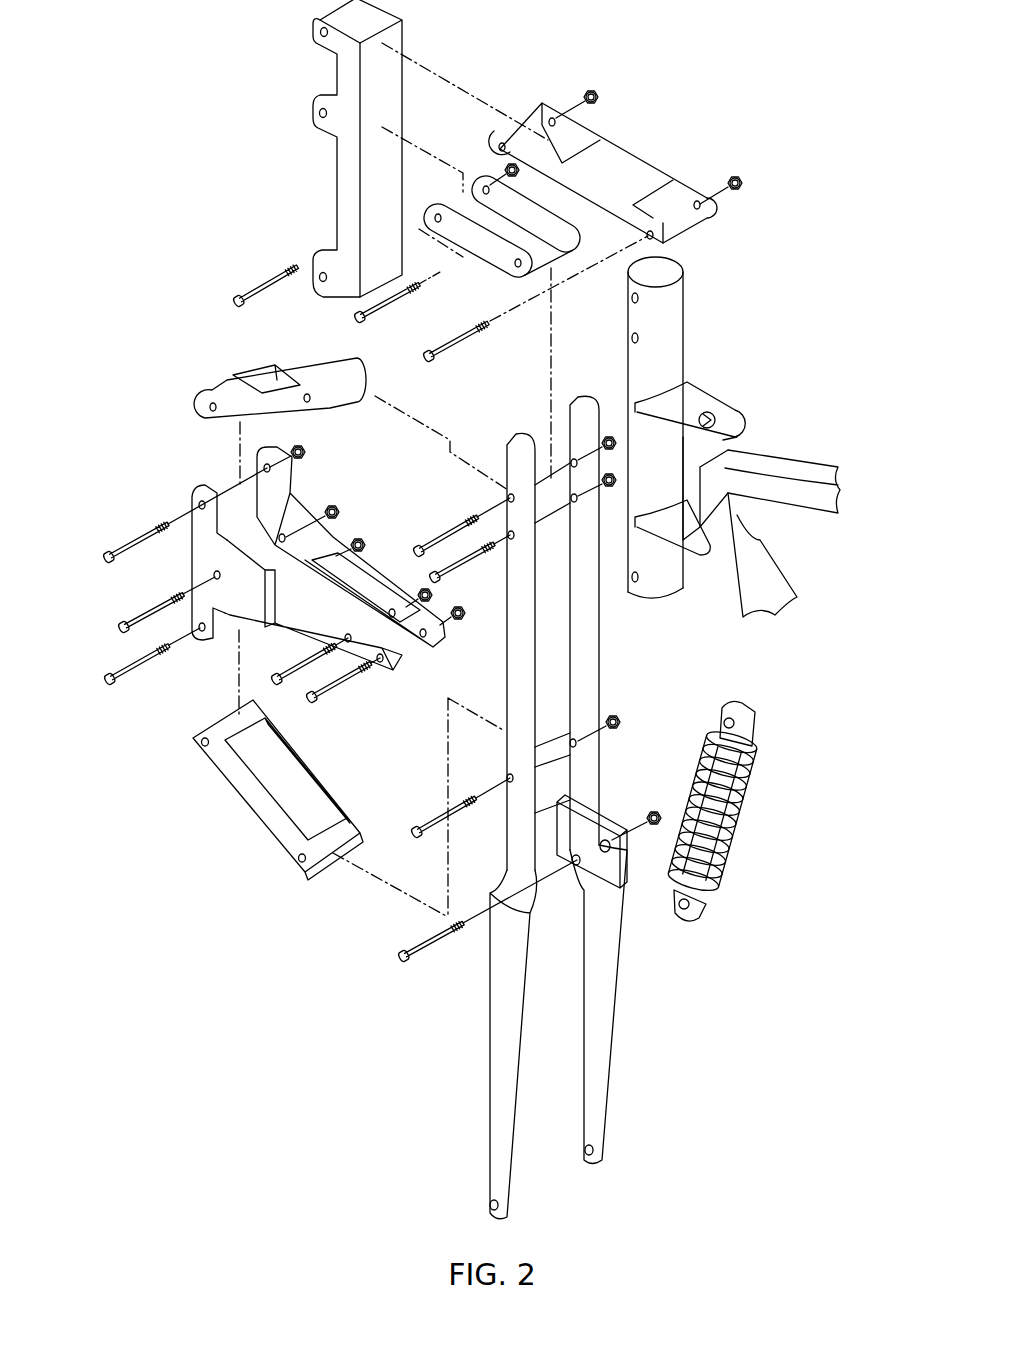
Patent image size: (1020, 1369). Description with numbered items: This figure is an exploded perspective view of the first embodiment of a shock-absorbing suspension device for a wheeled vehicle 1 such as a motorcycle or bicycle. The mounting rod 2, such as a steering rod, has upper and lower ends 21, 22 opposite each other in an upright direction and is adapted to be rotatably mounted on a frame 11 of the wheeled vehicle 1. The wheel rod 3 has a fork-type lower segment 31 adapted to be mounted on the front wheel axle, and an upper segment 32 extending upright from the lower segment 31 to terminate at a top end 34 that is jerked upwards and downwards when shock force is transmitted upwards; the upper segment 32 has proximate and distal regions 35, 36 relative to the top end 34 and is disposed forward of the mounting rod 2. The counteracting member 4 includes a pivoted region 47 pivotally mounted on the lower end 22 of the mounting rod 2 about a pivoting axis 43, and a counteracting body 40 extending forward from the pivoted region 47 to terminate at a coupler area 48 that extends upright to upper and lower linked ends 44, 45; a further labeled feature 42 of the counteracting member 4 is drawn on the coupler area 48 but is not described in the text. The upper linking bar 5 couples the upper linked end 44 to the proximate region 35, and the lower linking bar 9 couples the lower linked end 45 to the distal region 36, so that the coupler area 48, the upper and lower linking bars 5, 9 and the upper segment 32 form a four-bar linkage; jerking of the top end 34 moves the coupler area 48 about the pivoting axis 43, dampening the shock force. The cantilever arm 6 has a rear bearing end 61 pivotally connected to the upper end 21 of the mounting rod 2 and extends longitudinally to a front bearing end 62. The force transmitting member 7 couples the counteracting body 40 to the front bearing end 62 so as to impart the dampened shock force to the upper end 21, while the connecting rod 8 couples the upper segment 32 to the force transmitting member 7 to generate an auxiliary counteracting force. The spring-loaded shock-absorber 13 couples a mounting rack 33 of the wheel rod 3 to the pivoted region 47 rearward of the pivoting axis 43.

The wheeled vehicle 1 is at (776, 484).
The frame 11 is at (787, 497).
The mounting rod 2 is at (709, 461).
The upper end 21 is at (680, 291).
The lower end 22 is at (668, 576).
The wheel rod 3 is at (549, 800).
The lower segment 31 is at (498, 986).
The upper segment 32 is at (512, 615).
The mounting rack 33 is at (606, 866).
The top end 34 is at (492, 626).
The proximate region 35 is at (512, 540).
The distal region 36 is at (510, 783).
The counteracting member 4 is at (274, 584).
The counteracting body 40 is at (262, 618).
The through hole 42 is at (214, 576).
The pivoting axis 43 is at (348, 641).
The upper linked end 44 is at (202, 501).
The lower linked end 45 is at (203, 633).
The pivoted region 47 is at (310, 633).
The coupler area 48 is at (198, 580).
The upper linking bar 5 is at (216, 366).
The cantilever arm 6 is at (630, 145).
The rear bearing end 61 is at (654, 234).
The front bearing end 62 is at (503, 143).
The force transmitting member 7 is at (300, 95).
The connecting rod 8 is at (576, 258).
The lower linking bar 9 is at (225, 795).
The spring-loaded shock-absorber 13 is at (744, 833).